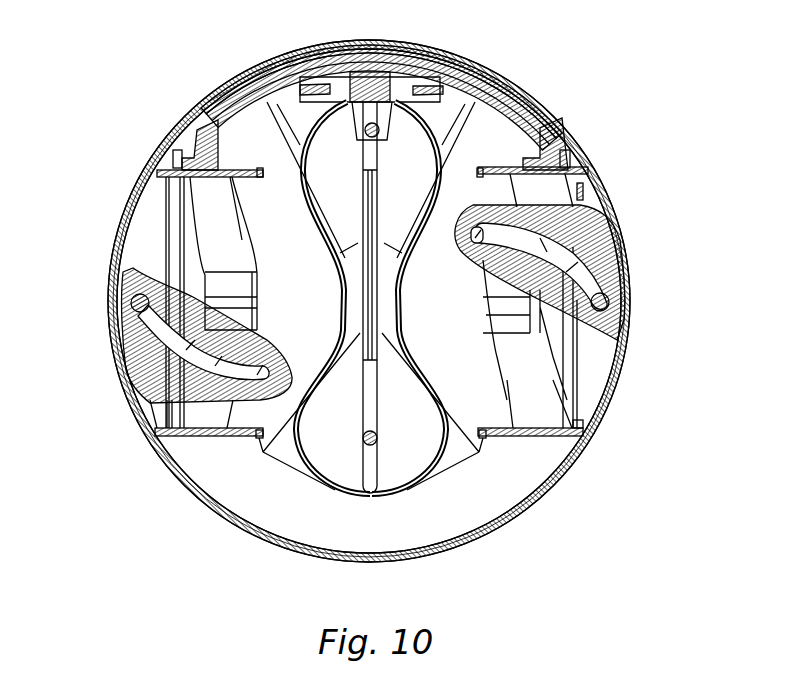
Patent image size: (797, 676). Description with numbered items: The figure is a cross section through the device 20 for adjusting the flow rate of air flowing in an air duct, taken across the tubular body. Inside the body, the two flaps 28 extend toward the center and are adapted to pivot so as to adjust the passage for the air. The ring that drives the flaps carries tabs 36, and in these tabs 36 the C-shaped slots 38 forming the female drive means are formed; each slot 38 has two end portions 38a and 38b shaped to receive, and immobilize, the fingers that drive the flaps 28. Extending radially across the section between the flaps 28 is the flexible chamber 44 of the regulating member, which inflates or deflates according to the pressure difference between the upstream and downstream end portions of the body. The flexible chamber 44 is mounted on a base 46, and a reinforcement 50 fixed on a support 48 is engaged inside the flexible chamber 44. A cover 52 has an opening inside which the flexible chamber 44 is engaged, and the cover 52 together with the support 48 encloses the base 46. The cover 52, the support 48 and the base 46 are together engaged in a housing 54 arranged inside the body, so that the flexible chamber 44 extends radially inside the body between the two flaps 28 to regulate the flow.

The device 20 is at (641, 86).
The flaps 28 is at (213, 222).
The tabs 36 is at (150, 425).
The C-shaped slots 38 is at (148, 330).
The end portion 38a is at (132, 300).
The end portion 38b is at (258, 382).
The flexible chamber 44 is at (308, 125).
The base 46 is at (508, 92).
The support 48 is at (477, 70).
The reinforcement 50 is at (370, 192).
The cover 52 is at (537, 103).
The housing 54 is at (573, 152).